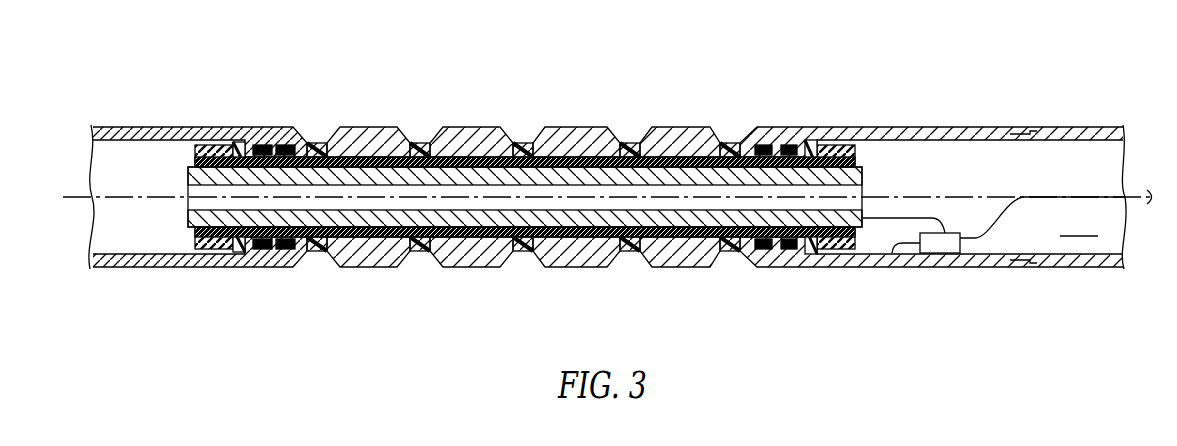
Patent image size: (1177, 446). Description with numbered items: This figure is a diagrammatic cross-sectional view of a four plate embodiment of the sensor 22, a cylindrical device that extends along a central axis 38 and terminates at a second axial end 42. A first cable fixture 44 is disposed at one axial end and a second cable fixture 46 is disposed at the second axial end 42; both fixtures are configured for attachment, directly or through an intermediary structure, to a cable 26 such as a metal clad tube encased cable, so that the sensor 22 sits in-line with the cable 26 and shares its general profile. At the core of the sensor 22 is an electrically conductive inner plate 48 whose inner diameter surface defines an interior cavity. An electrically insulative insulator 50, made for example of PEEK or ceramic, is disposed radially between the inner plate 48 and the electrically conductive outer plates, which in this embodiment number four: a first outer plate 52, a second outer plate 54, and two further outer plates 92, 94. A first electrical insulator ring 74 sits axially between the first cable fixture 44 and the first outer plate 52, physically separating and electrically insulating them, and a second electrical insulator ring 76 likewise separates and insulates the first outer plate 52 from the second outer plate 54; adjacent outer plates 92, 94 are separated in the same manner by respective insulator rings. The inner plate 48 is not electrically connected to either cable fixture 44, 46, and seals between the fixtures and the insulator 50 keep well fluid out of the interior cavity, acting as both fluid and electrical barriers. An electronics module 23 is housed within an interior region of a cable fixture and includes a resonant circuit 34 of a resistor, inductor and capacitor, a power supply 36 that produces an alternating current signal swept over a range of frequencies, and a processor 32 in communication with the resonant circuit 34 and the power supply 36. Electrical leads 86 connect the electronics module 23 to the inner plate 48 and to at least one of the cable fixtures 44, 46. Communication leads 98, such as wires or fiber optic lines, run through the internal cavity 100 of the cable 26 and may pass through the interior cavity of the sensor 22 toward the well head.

The sensor 22 is at (866, 100).
The cable 26 is at (1070, 128).
The central axis 38 is at (80, 197).
The first cable fixture 44 is at (160, 267).
The inner plate 48 is at (187, 173).
The electrical insulator 50 is at (363, 157).
The first outer plate 52 is at (365, 257).
The second outer plate 54 is at (473, 255).
The first electrical insulator ring 74 is at (317, 257).
The second electrical insulator ring 76 is at (418, 257).
The electrical leads 86 is at (900, 218).
The outer plate 92 is at (578, 255).
The outer plate 94 is at (678, 255).
The communication leads 98 is at (1085, 197).
The internal cavity 100 is at (1080, 223).
The second cable fixture 46 is at (850, 267).
The second axial end 42 is at (893, 267).
The electronics module 23 is at (986, 278).
The processor 32 is at (986, 278).
The resonant circuit 34 is at (986, 278).
The power supply 36 is at (947, 245).